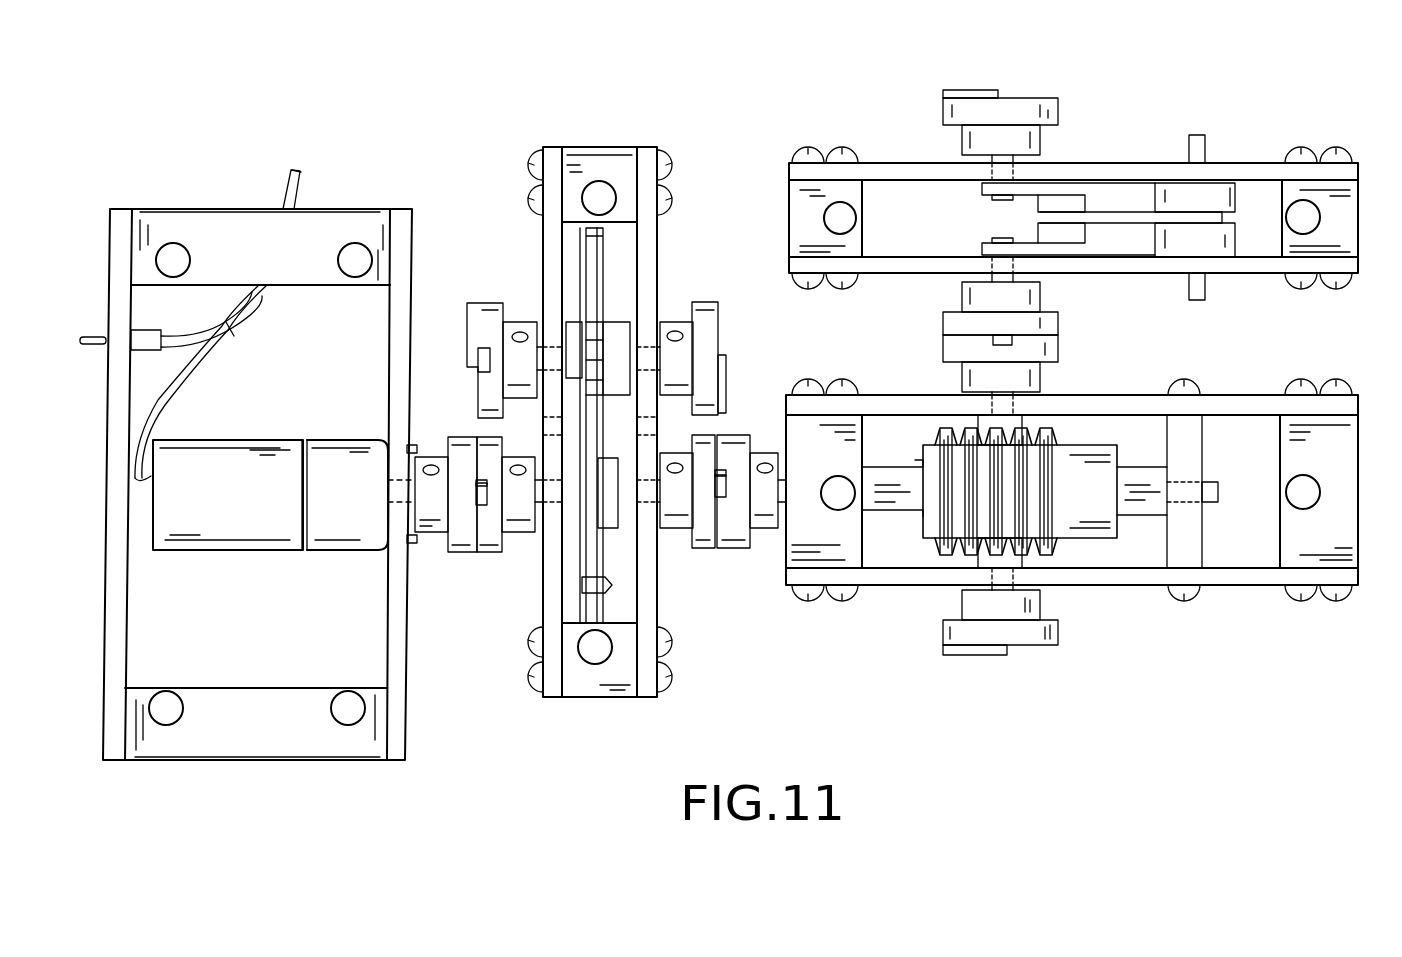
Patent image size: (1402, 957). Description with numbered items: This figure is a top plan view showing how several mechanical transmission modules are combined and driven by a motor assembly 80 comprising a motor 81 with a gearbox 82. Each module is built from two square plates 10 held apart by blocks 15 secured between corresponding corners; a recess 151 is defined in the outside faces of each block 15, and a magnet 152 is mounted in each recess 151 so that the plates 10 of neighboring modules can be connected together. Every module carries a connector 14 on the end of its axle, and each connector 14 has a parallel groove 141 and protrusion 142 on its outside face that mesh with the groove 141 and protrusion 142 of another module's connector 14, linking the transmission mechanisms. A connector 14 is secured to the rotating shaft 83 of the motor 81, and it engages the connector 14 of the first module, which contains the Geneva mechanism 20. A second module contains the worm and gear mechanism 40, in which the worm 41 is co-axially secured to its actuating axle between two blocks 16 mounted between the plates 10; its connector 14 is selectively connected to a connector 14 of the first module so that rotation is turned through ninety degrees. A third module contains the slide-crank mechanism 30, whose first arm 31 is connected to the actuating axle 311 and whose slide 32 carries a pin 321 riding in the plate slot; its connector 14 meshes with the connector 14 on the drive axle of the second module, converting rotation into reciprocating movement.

The plate 10 is at (117, 297).
The connector 14 is at (708, 320).
The block 15 is at (357, 218).
The block 16 is at (1192, 440).
The Geneva mechanism 20 is at (508, 236).
The slide-crank mechanism 30 is at (1100, 218).
The first arm 31 is at (1048, 188).
The slide 32 is at (1226, 192).
The worm and gear mechanism 40 is at (1056, 527).
The worm 41 is at (1085, 465).
The motor assembly 80 is at (286, 338).
The motor 81 is at (242, 535).
The gearbox 82 is at (348, 540).
The rotating shaft 83 is at (412, 492).
The groove 141 is at (484, 538).
The protrusion 142 is at (480, 488).
The recess 151 is at (342, 285).
The magnet 152 is at (354, 262).
The actuating axle 311 is at (1000, 200).
The pin 321 is at (1197, 135).